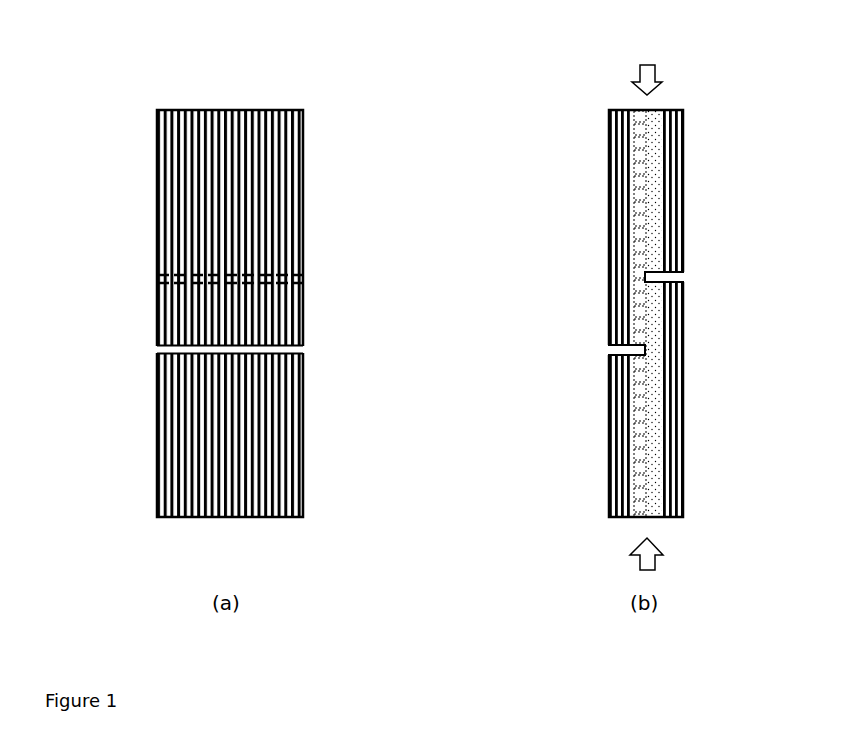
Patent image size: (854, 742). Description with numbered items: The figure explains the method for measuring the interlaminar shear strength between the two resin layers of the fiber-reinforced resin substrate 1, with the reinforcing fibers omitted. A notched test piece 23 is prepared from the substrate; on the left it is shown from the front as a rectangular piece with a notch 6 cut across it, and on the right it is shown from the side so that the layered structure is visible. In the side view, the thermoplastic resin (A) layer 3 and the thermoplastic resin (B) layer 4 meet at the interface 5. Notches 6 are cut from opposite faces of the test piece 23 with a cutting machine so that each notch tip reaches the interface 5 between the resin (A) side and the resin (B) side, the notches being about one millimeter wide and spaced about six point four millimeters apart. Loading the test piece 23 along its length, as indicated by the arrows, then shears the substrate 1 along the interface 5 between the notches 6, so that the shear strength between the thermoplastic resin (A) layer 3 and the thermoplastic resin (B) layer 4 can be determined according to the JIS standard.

The notched test piece 23 is at (352, 273).
The fiber-reinforced resin substrate 1 is at (352, 307).
The thermoplastic resin (A) layer 3 is at (177, 233).
The thermoplastic resin (B) layer 4 is at (660, 465).
The interface 5 is at (645, 228).
The notch 6 is at (303, 353).